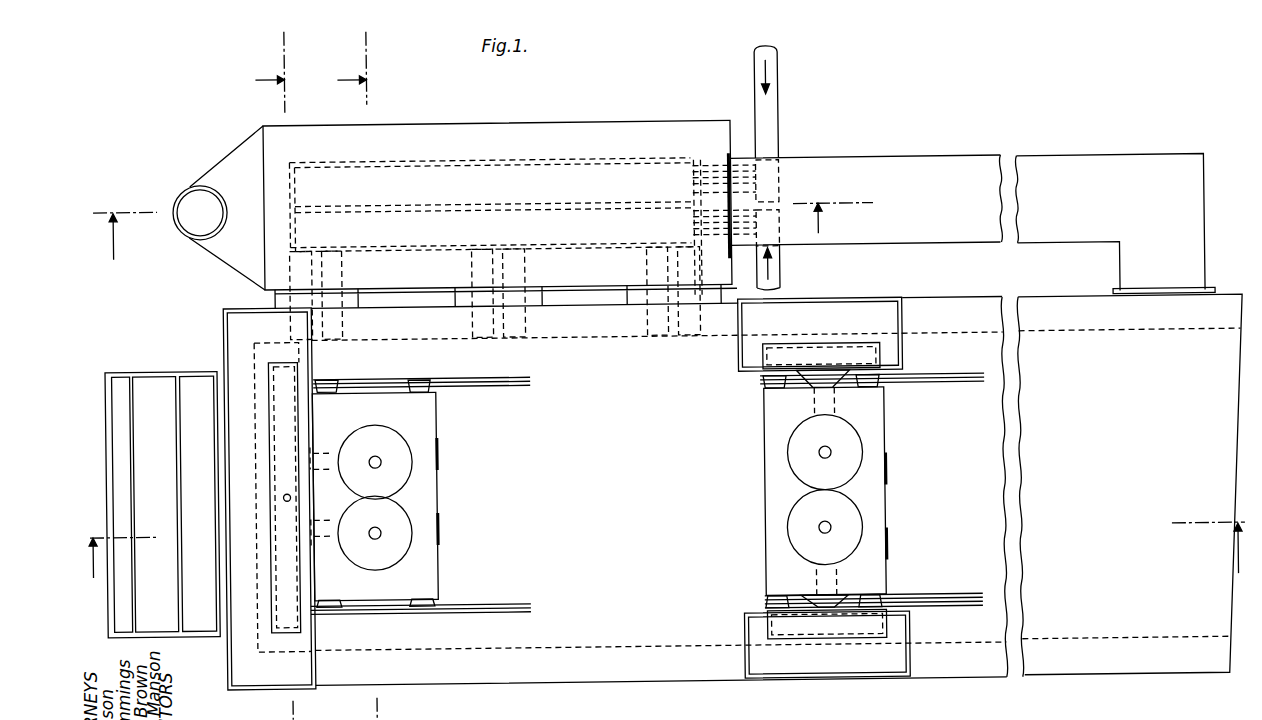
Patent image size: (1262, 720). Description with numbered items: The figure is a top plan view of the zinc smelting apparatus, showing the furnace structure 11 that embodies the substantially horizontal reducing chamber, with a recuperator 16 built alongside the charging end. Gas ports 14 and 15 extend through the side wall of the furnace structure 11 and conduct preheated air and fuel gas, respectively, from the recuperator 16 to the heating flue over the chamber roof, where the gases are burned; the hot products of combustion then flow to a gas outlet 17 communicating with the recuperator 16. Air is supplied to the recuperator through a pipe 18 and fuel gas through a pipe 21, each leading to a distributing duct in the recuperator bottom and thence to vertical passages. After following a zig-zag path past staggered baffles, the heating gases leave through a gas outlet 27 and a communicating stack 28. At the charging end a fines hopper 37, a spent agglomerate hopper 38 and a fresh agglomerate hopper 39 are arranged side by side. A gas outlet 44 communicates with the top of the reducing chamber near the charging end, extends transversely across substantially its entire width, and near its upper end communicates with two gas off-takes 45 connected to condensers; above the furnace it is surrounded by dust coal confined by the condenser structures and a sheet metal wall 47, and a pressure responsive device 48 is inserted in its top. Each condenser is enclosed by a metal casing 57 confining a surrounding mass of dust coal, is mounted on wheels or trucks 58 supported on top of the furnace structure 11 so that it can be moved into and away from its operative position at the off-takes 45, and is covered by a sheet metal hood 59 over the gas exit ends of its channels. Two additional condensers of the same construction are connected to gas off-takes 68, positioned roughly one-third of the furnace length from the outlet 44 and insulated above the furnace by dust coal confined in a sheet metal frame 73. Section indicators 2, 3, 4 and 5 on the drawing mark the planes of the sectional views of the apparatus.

The section line 2- 2 is at (671, 561).
The section line 3- 3 is at (261, 73).
The section line 4- 4 is at (342, 69).
The section line 5- 5 is at (483, 232).
The furnace structure 11 is at (779, 490).
The gas port 14 is at (653, 324).
The gas port 15 is at (677, 343).
The recuperator 16 is at (588, 132).
The gas outlet 17 is at (1194, 239).
The pipe 18 is at (777, 268).
The pipe 21 is at (775, 118).
The gas outlet 27 is at (235, 153).
The stack 28 is at (191, 201).
The fines hopper 37 is at (110, 381).
The spent agglomerate hopper 38 is at (150, 385).
The fresh agglomerate hopper 39 is at (190, 385).
The gas outlet 44 is at (277, 478).
The gas off-takes 45 is at (325, 572).
The sheet metal wall 47 is at (220, 311).
The pressure responsive device 48 is at (281, 502).
The metal casing 57 is at (908, 416).
The wheels or trucks 58 is at (912, 363).
The sheet metal hood 59 is at (908, 532).
The gas off-takes 68 is at (779, 626).
The sheet metal frame 73 is at (929, 634).